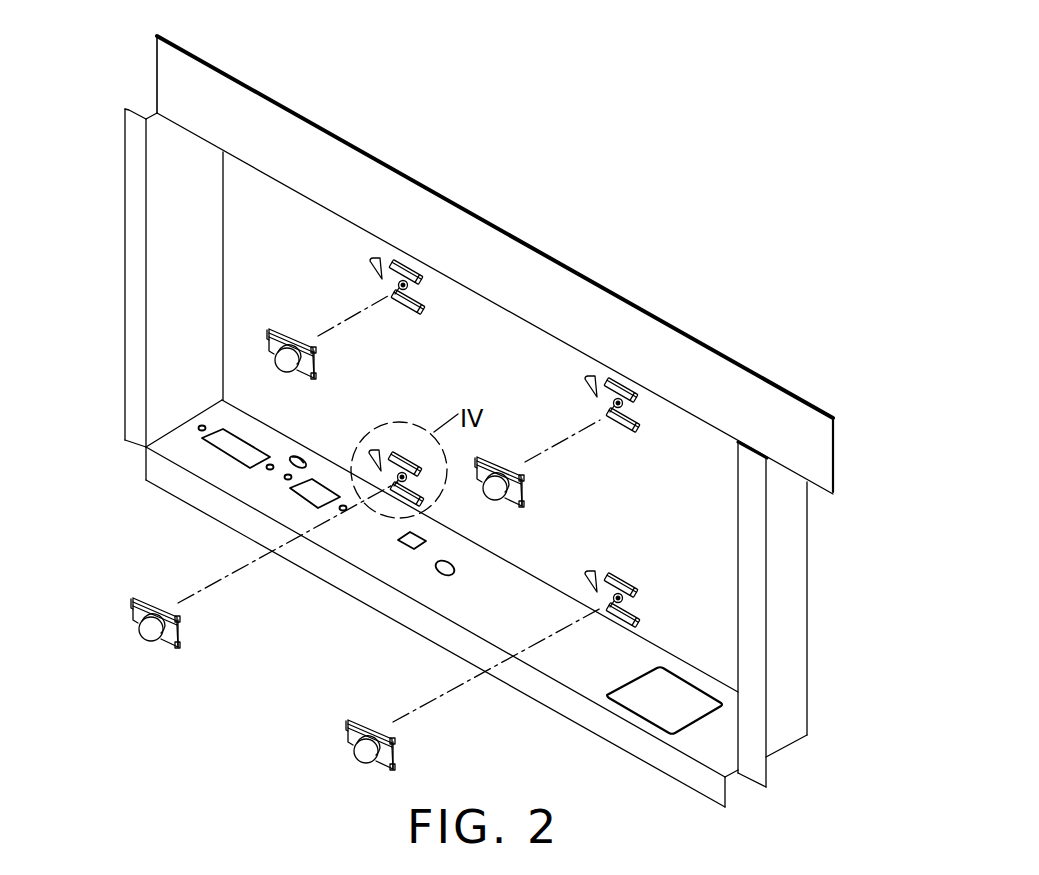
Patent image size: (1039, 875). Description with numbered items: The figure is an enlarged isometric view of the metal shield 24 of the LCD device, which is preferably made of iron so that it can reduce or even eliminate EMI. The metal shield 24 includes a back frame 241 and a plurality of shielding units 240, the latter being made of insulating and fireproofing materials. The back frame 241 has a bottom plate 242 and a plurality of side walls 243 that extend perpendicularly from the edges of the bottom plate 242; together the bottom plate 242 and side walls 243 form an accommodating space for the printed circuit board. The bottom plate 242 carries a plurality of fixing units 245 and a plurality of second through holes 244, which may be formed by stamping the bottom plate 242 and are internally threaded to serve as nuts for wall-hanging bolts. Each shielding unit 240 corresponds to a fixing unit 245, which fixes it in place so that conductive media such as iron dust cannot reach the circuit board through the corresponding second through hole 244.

The metal shield 24 is at (489, 120).
The shielding unit 240 is at (143, 637).
The back frame 241 is at (750, 806).
The bottom plate 242 is at (513, 358).
The side wall 243 is at (168, 338).
The second through hole 244 is at (403, 283).
The fixing unit 245 is at (382, 246).